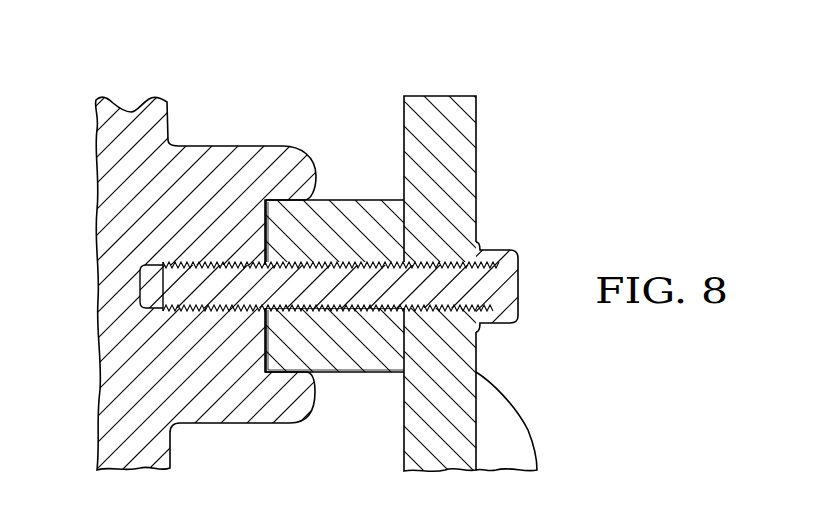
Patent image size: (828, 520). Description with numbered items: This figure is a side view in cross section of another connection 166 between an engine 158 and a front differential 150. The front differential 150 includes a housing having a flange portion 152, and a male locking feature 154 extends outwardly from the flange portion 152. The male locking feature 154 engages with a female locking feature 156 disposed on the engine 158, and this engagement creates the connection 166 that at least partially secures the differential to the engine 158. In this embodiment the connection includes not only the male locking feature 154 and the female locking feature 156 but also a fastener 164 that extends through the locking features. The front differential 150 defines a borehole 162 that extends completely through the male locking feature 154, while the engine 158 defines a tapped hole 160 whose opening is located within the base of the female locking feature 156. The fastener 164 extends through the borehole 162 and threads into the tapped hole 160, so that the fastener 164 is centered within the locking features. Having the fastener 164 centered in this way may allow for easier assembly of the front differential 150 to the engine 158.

The front differential 150 is at (508, 438).
The flange portion 152 is at (480, 348).
The male locking feature 154 is at (325, 208).
The female locking feature 156 is at (223, 165).
The engine 158 is at (133, 113).
The tapped hole 160 is at (148, 297).
The borehole 162 is at (435, 262).
The fastener 164 is at (498, 258).
The connection 166 is at (338, 100).